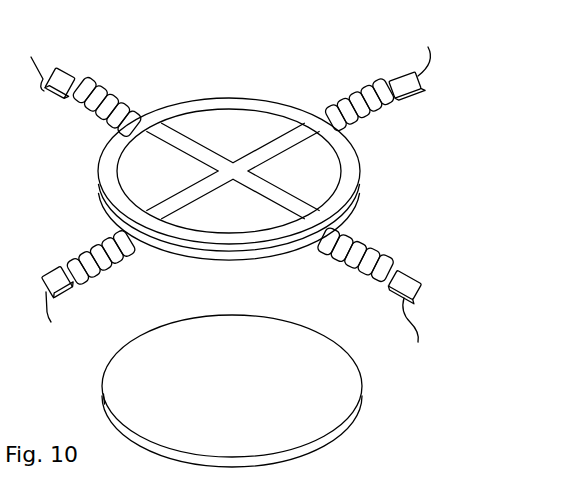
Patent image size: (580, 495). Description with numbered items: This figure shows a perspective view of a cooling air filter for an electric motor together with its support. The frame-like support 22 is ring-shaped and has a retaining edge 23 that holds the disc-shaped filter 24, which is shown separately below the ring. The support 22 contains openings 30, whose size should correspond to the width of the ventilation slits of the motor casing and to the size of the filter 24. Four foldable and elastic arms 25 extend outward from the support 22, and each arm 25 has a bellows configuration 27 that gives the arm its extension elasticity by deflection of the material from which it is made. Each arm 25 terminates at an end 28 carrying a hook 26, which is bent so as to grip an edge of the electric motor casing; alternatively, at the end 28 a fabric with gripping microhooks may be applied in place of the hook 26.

The frame-like support 22 is at (345, 168).
The retaining edge 23 is at (238, 262).
The filter 24 is at (255, 428).
The foldable and elastic arm 25 is at (148, 84).
The hook 26 is at (232, 200).
The bellows configuration 27 is at (92, 117).
The end of arm 28 is at (72, 80).
The openings 30 is at (227, 128).